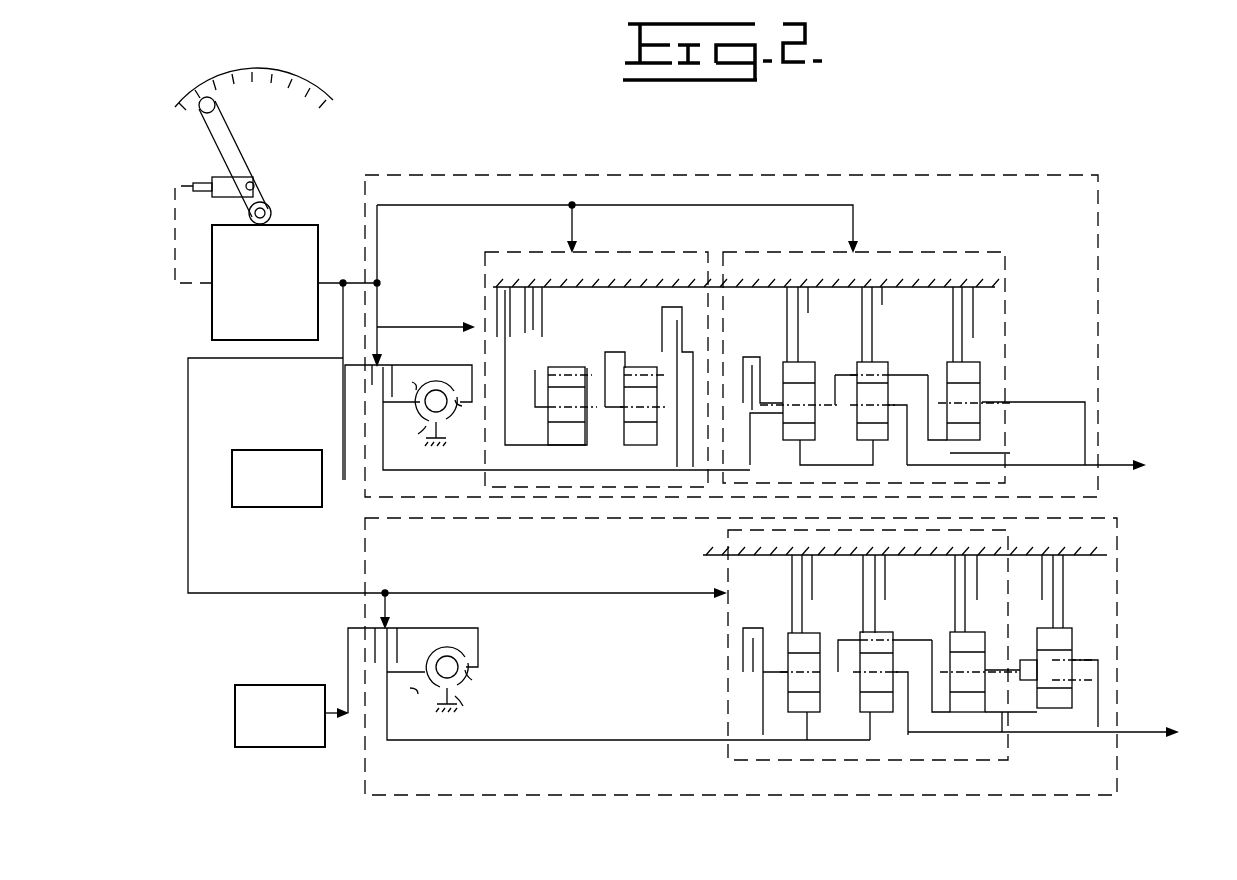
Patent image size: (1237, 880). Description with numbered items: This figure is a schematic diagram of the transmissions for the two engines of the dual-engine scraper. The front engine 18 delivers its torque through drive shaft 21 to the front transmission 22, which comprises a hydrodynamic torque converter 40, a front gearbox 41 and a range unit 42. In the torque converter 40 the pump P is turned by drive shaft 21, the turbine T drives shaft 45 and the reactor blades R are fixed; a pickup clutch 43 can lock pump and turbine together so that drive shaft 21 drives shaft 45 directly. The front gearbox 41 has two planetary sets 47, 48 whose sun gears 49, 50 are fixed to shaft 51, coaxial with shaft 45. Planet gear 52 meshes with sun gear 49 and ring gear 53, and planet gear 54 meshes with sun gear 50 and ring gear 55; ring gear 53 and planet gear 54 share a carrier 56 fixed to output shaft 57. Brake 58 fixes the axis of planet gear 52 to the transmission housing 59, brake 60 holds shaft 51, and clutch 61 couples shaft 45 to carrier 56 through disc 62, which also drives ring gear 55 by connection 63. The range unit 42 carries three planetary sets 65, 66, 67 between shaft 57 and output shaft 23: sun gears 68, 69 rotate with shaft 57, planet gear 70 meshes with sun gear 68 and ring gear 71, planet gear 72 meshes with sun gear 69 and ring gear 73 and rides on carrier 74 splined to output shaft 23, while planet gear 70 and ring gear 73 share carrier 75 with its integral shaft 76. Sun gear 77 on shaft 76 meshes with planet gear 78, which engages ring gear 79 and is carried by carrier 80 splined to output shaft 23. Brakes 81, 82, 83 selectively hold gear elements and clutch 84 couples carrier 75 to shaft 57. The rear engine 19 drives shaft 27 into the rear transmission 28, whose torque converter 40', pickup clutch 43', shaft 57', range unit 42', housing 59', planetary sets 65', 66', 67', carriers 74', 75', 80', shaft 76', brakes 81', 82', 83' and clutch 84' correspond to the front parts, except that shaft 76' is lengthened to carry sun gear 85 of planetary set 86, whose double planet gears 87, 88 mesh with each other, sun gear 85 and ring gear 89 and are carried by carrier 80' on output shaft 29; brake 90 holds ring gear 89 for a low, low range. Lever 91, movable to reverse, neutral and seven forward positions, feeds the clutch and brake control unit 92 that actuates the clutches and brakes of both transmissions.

The front engine 18 is at (272, 450).
The rear engine 19 is at (280, 685).
The drive shaft 21 is at (345, 418).
The front transmission 22 is at (631, 168).
The output shaft 23 is at (1120, 462).
The drive shaft 27 is at (348, 640).
The rear transmission 28 is at (358, 765).
The output shaft 29 is at (1148, 725).
The hydrodynamic torque converter 40 is at (412, 403).
The front gearbox 41 is at (509, 245).
The range unit 42 is at (844, 348).
The pickup clutch 43 is at (570, 301).
The shaft 45 is at (448, 472).
The planetary set 47 is at (575, 361).
The planetary set 48 is at (648, 356).
The sun gear 49 is at (548, 447).
The sun gear 50 is at (640, 447).
The shaft 51 is at (600, 447).
The planet gear 52 is at (562, 412).
The ring gear 53 is at (548, 375).
The planet gear 54 is at (640, 416).
The ring gear 55 is at (648, 377).
The carrier 56 is at (604, 355).
The output shaft 57 is at (703, 506).
The brake 58 is at (545, 300).
The transmission housing 59 is at (746, 270).
The brake 60 is at (500, 305).
The clutch 61 is at (675, 295).
The disc 62 is at (703, 557).
The connection 63 is at (720, 345).
The planetary set 65 is at (798, 346).
The planetary set 66 is at (888, 363).
The planetary set 67 is at (964, 363).
The sun gear 68 is at (795, 432).
The sun gear 69 is at (882, 433).
The planet gear 70 is at (770, 445).
The ring gear 71 is at (792, 378).
The planet gear 72 is at (865, 413).
The ring gear 73 is at (870, 370).
The carrier 74 is at (917, 419).
The carrier 75 is at (869, 348).
The shaft 76 is at (998, 452).
The sun gear 77 is at (978, 426).
The planet gear 78 is at (978, 388).
The ring gear 79 is at (978, 360).
The carrier 80 is at (1027, 430).
The brake 81 is at (1010, 304).
The brake 82 is at (902, 278).
The brake 83 is at (833, 284).
The clutch 84 is at (758, 362).
The sun gear 85 is at (1075, 705).
The planetary set 86 is at (1071, 614).
The double planet gear 87 is at (1072, 677).
The double planet gear 88 is at (1072, 652).
The ring gear 89 is at (1072, 633).
The brake 90 is at (1065, 562).
The lever 91 is at (242, 146).
The clutch and brake control unit 92 is at (289, 222).
The torque converter 40' is at (437, 661).
The range unit 42' is at (838, 645).
The pickup clutch 43' is at (435, 622).
The shaft 57' is at (628, 684).
The housing 59' is at (773, 594).
The planetary set 65' is at (825, 666).
The planetary set 66' is at (900, 652).
The planetary set 67' is at (988, 633).
The carrier 74' is at (905, 703).
The carrier 75' is at (898, 703).
The shaft 76' is at (1030, 751).
The planet carrier 80' is at (1043, 753).
The brake 81' is at (1025, 571).
The brake 82' is at (899, 594).
The brake 83' is at (840, 577).
The clutch 84' is at (765, 663).